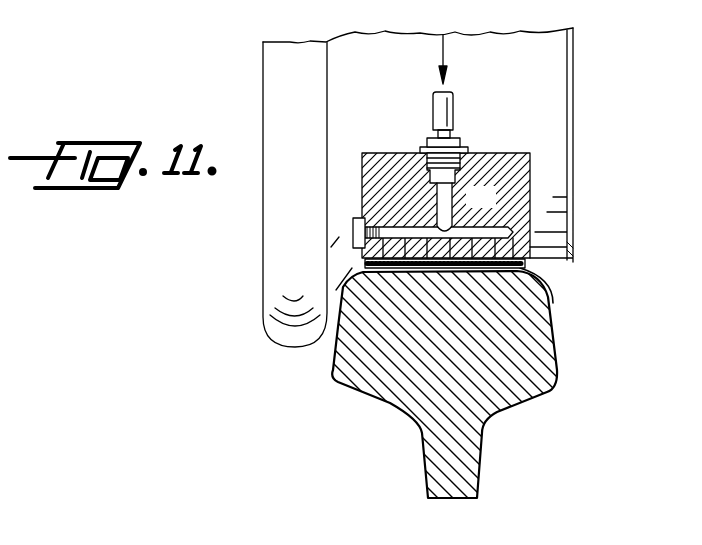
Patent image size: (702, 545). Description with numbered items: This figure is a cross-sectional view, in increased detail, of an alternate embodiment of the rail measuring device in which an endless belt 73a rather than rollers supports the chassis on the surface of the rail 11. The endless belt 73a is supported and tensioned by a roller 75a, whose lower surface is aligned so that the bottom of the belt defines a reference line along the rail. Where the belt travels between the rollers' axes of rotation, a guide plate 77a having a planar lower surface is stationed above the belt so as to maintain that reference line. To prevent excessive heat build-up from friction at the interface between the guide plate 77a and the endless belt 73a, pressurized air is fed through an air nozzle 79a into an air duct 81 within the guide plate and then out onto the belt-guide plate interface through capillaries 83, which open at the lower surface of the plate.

The rail 11 is at (548, 280).
The endless belt 73a is at (548, 300).
The roller 75a is at (270, 228).
The guide plate 77a is at (399, 152).
The air nozzle 79a is at (456, 110).
The air duct 81 is at (456, 235).
The capillary 83 is at (401, 265).